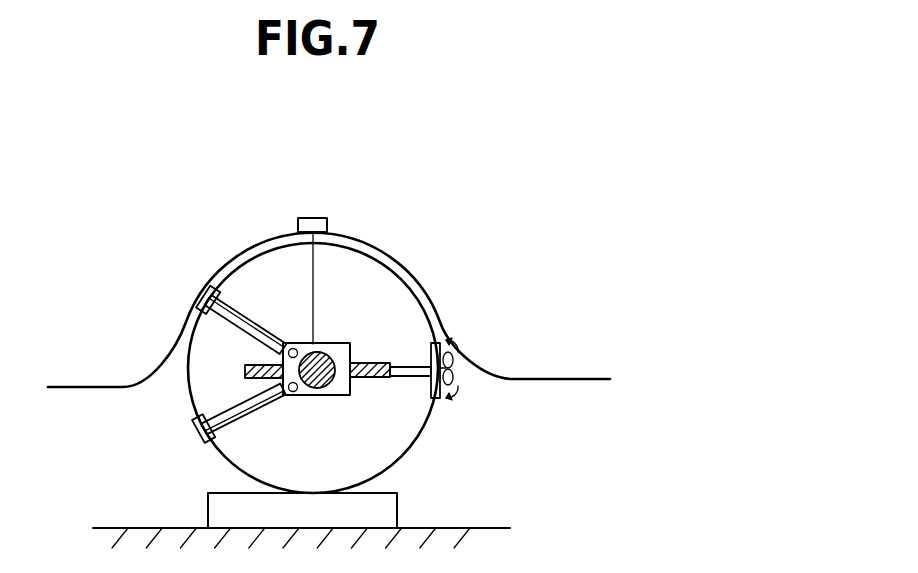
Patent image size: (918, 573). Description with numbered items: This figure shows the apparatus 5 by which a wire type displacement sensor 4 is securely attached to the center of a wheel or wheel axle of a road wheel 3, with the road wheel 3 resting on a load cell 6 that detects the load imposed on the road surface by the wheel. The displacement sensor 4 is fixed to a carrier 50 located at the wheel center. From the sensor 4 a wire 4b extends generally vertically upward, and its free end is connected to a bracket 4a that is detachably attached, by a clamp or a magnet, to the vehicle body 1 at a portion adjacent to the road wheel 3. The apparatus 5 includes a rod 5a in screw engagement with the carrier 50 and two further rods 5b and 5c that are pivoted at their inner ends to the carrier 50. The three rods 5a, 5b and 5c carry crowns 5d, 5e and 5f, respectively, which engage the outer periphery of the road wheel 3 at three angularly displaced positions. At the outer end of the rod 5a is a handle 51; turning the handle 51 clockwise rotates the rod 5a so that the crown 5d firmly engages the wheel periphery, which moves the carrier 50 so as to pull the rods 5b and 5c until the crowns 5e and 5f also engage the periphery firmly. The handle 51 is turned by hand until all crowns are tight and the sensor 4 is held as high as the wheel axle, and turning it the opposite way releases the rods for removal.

The vehicle body 1 is at (80, 394).
The road wheel 3 is at (182, 372).
The displacement sensor 4 is at (333, 350).
The bracket 4a is at (322, 220).
The wire 4b is at (313, 270).
The apparatus 5 is at (372, 355).
The rod 5a is at (408, 380).
The rod 5b is at (257, 410).
The rod 5c is at (242, 320).
The crown 5d is at (437, 400).
The crown 5e is at (193, 438).
The crown 5f is at (209, 287).
The carrier 50 is at (327, 396).
The handle 51 is at (452, 377).
The load cell 6 is at (404, 502).